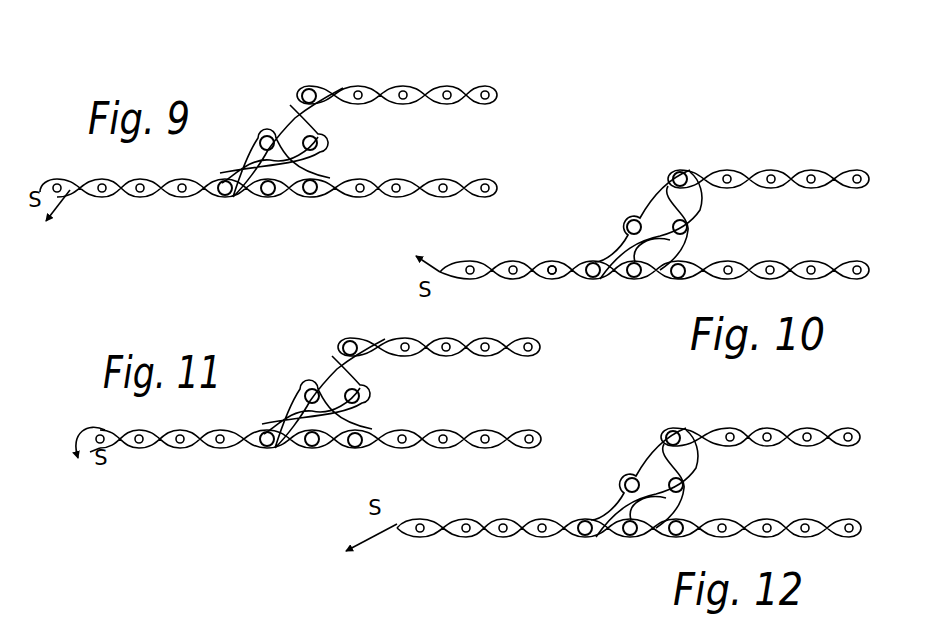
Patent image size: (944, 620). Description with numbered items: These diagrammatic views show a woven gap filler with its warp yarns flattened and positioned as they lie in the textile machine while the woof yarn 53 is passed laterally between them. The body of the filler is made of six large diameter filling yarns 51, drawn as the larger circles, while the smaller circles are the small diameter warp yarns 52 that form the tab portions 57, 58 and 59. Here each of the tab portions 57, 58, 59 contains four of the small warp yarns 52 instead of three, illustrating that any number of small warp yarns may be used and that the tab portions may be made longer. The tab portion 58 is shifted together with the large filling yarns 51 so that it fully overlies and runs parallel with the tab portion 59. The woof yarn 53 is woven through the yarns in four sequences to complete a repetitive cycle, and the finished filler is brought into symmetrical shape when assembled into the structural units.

In FIG. 9, the large diameter filling yarn 51 is at (310, 136).
In FIG. 10, the large diameter filling yarn 51 is at (678, 279).
In FIG. 11, the large diameter filling yarn 51 is at (350, 388).
In FIG. 12, the large diameter filling yarn 51 is at (676, 537).
In FIG. 9, the small diameter warp yarn 52 is at (140, 197).
In FIG. 10, the small diameter warp yarn 52 is at (552, 265).
In FIG. 11, the small diameter warp yarn 52 is at (139, 448).
In FIG. 12, the small diameter warp yarn 52 is at (503, 523).
In FIG. 9, the woof yarn 53 is at (60, 170).
In FIG. 10, the woof yarn 53 is at (441, 275).
In FIG. 11, the woof yarn 53 is at (197, 432).
In FIG. 12, the woof yarn 53 is at (411, 541).
In FIG. 9, the tab portion 57 is at (102, 197).
In FIG. 10, the tab portion 57 is at (556, 279).
In FIG. 11, the tab portion 57 is at (240, 448).
In FIG. 12, the tab portion 57 is at (466, 537).
In FIG. 9, the tab portion 58 is at (410, 88).
In FIG. 10, the tab portion 58 is at (748, 172).
In FIG. 11, the tab portion 58 is at (408, 356).
In FIG. 12, the tab portion 58 is at (745, 446).
In FIG. 9, the tab portion 59 is at (440, 180).
In FIG. 10, the tab portion 59 is at (783, 266).
In FIG. 11, the tab portion 59 is at (443, 430).
In FIG. 12, the tab portion 59 is at (770, 519).